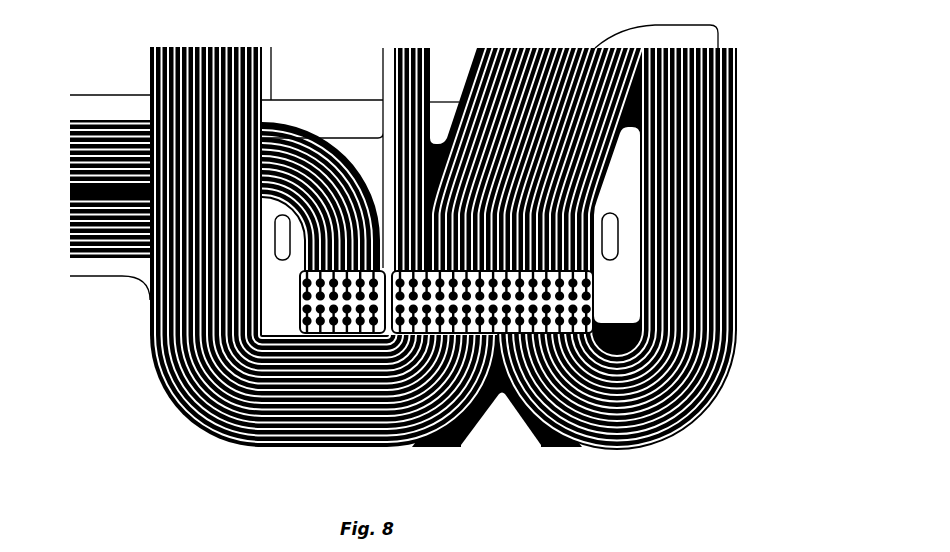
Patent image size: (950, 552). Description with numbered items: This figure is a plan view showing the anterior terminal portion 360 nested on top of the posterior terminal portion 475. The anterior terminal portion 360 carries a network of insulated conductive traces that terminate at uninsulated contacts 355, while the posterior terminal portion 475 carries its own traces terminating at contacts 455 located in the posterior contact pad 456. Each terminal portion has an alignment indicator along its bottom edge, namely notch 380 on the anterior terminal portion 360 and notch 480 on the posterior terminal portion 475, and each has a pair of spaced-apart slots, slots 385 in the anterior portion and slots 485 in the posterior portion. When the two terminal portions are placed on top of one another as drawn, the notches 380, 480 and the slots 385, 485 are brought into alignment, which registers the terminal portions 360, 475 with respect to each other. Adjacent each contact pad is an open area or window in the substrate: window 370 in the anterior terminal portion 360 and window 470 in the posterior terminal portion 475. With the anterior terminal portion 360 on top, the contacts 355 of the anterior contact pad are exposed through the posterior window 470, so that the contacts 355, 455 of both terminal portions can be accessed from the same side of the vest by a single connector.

The anterior terminal portion 360 is at (735, 78).
The slots 385 is at (618, 238).
The slots 485 is at (275, 256).
The posterior terminal portion 475 is at (148, 324).
The window 370 is at (251, 379).
The contact pad 456 is at (306, 309).
The contacts 455 is at (305, 328).
The contacts 355 is at (588, 346).
The window 470 is at (594, 328).
The notch 380 is at (502, 409).
The notch 480 is at (490, 408).